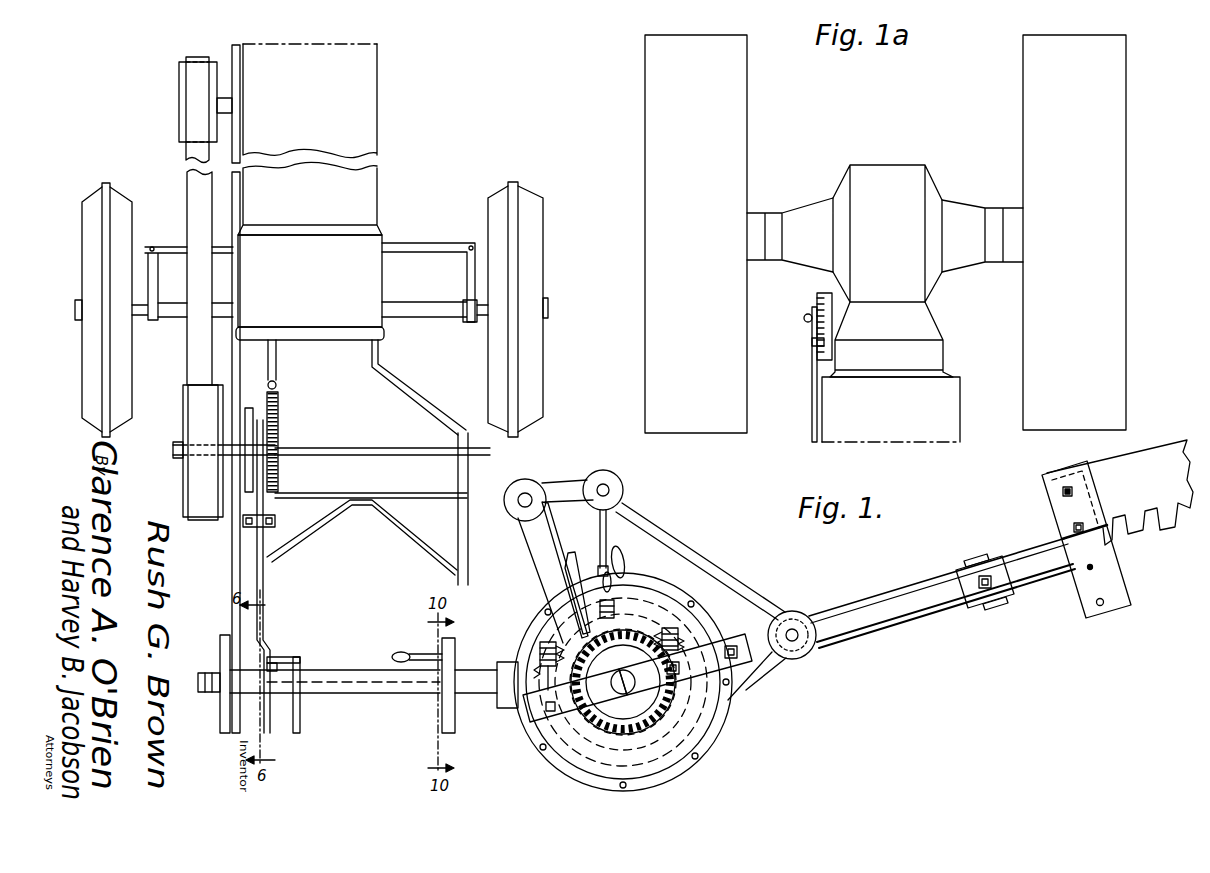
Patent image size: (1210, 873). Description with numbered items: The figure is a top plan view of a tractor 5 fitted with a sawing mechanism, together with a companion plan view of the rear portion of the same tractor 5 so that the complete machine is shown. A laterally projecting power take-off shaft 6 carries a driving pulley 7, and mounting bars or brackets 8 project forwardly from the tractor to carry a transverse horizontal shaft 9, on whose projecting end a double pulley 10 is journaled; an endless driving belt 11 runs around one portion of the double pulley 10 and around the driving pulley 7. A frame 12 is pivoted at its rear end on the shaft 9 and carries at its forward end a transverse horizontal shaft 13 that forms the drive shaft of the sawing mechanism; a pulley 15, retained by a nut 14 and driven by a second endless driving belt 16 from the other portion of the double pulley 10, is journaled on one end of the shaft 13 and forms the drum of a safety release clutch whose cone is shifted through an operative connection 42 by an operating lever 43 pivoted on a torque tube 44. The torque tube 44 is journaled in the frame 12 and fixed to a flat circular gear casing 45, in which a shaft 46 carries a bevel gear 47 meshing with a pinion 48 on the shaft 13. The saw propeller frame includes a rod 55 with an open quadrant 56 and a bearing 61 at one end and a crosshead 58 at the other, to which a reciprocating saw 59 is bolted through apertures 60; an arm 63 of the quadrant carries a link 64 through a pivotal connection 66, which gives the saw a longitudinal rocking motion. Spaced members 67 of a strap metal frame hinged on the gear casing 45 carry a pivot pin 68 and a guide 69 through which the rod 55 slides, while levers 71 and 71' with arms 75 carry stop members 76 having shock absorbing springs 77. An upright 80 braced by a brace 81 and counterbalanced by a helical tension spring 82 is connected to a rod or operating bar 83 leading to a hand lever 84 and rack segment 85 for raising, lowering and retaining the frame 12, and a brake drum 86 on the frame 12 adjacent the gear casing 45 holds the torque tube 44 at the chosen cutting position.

In FIG. 1, the tractor 5 is at (378, 107).
In FIG. 1A, the tractor 5 is at (955, 425).
In FIG. 1, the power take-off shaft 6 is at (224, 105).
In FIG. 1, the driving pulley 7 is at (179, 92).
In FIG. 1, the mounting bars or brackets 8 is at (277, 370).
In FIG. 1, the transverse horizontal shaft 9 is at (388, 447).
In FIG. 1, the double pulley 10 is at (183, 430).
In FIG. 1, the endless driving belt 11 is at (195, 197).
In FIG. 1, the frame 12 is at (468, 541).
In FIG. 1, the transverse horizontal shaft 13 is at (335, 680).
In FIG. 1, the nut 14 is at (205, 673).
In FIG. 1, the pulley 15 is at (228, 720).
In FIG. 1, the second endless driving belt 16 is at (237, 568).
In FIG. 1, the operative connection 42 is at (283, 648).
In FIG. 1, the operating lever 43 is at (303, 742).
In FIG. 1, the torque tube 44 is at (373, 700).
In FIG. 1, the gear casing 45 is at (712, 735).
In FIG. 1, the shaft 46 is at (624, 694).
In FIG. 1, the bevel gear 47 is at (692, 770).
In FIG. 1, the pinion 48 is at (528, 722).
In FIG. 1, the rod 55 is at (1052, 578).
In FIG. 1, the open quadrant 56 is at (683, 545).
In FIG. 1, the crosshead 58 is at (1130, 590).
In FIG. 1, the reciprocating saw 59 is at (1117, 470).
In FIG. 1, the apertures 60 is at (1102, 606).
In FIG. 1, the bearing 61 is at (805, 660).
In FIG. 1, the arm 63 is at (565, 485).
In FIG. 1, the link 64 is at (548, 556).
In FIG. 1, the pivotal connection 66 is at (527, 497).
In FIG. 1, the spaced members 67 is at (843, 622).
In FIG. 1, the pivot pin 68 is at (975, 604).
In FIG. 1, the guide 69 is at (974, 556).
In FIG. 1, the lever 71 is at (640, 550).
In FIG. 1, the lever 71' is at (580, 578).
In FIG. 1, the arms 75 is at (652, 625).
In FIG. 1, the stop members 76 is at (540, 640).
In FIG. 1, the shock absorbing springs 77 is at (692, 645).
In FIG. 1, the upright 80 is at (250, 525).
In FIG. 1, the brace 81 is at (268, 580).
In FIG. 1, the helical tension spring 82 is at (279, 437).
In FIG. 1, the rod or operating bar 83 is at (212, 362).
In FIG. 1A, the rod or operating bar 83 is at (812, 430).
In FIG. 1A, the hand lever 84 is at (820, 305).
In FIG. 1A, the rack segment 85 is at (825, 345).
In FIG. 1, the brake drum 86 is at (445, 720).